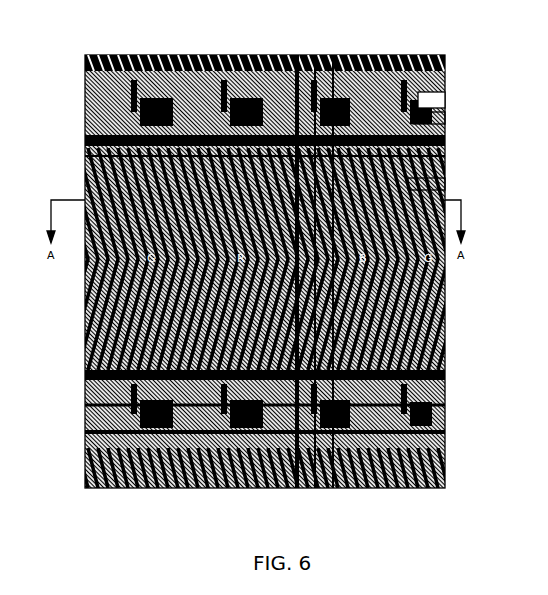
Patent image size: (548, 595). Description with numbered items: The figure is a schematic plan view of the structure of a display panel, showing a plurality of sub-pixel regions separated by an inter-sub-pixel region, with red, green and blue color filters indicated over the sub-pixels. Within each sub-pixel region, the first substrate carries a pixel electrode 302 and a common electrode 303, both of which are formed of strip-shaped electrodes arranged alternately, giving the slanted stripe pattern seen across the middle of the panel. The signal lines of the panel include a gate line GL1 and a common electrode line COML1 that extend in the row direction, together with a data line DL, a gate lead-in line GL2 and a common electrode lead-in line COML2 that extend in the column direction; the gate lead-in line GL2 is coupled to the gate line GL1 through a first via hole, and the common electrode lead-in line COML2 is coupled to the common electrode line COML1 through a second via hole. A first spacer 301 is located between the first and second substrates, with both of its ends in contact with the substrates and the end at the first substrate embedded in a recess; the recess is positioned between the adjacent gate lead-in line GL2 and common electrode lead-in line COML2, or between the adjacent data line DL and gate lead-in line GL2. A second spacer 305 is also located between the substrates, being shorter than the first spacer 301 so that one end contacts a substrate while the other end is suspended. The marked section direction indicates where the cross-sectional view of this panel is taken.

The first spacer 301 is at (437, 93).
The second spacer 305 is at (437, 110).
The common electrode 303 is at (437, 148).
The pixel electrode 302 is at (437, 176).
The common electrode line COML1 is at (437, 397).
The gate line GL1 is at (437, 421).
The data line DL is at (287, 480).
The gate lead-in line GL2 is at (307, 480).
The common electrode lead-in line COML2 is at (325, 480).